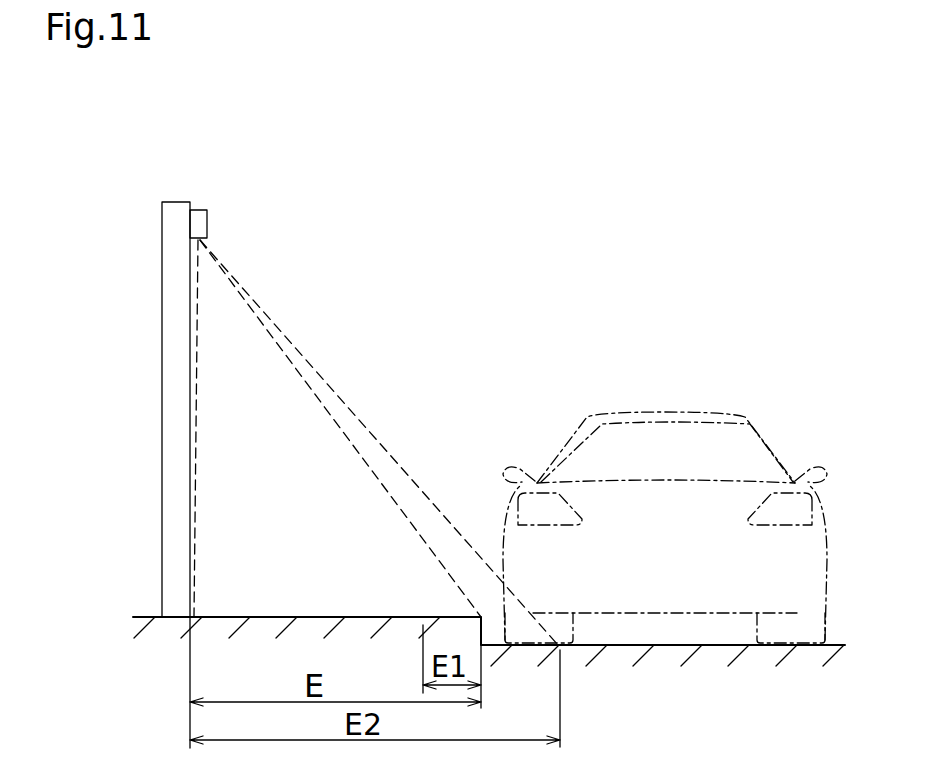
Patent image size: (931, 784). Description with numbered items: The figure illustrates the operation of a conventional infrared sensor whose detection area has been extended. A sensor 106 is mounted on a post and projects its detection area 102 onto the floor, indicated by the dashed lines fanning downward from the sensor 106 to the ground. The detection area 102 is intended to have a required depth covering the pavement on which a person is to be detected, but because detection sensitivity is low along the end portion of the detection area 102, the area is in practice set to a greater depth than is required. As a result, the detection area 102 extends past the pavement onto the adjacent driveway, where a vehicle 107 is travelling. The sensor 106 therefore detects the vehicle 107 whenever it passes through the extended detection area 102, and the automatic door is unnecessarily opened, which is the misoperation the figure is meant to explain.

The detection area 102 is at (312, 617).
The sensor 106 is at (207, 224).
The vehicle 107 is at (705, 417).